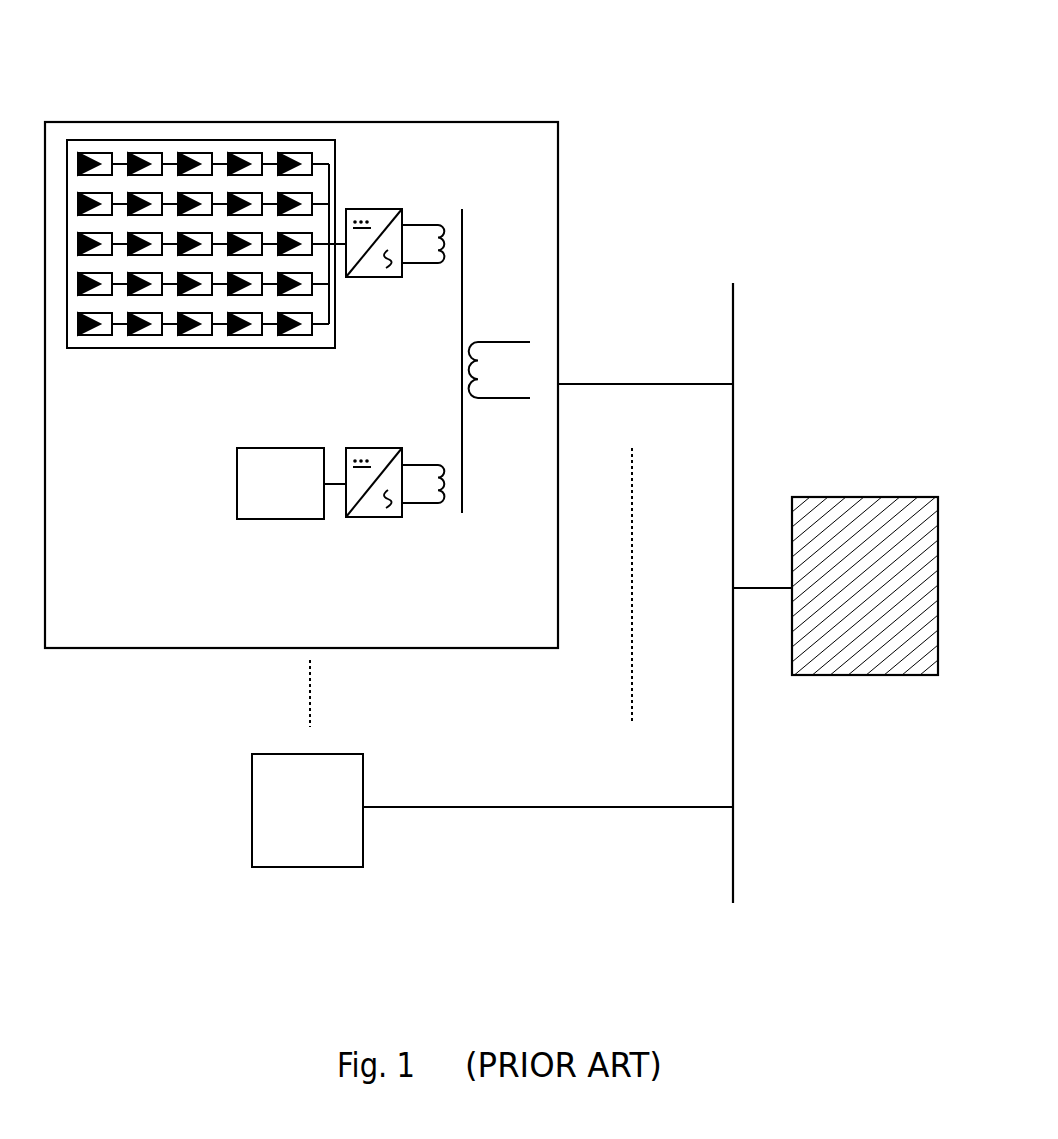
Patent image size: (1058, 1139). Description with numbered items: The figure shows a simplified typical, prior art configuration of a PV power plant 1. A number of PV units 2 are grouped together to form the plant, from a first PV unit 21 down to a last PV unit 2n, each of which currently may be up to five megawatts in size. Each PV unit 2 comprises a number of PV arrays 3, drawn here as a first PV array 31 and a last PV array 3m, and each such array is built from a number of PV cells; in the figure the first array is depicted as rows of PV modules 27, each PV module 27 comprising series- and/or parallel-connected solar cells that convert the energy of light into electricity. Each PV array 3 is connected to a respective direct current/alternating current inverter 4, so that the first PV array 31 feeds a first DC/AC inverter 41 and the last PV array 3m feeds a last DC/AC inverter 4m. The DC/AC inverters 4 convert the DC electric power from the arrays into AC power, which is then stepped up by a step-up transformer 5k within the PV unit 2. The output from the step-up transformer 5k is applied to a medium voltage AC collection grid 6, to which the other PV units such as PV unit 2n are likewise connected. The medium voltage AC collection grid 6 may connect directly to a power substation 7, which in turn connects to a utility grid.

The PV power plant 1 is at (709, 84).
The PV unit 2 is at (365, 449).
The PV unit 21 is at (528, 232).
The PV unit 2n is at (262, 825).
The PV array 3 is at (233, 291).
The PV array 31 is at (145, 138).
The PV array 3m is at (237, 494).
The DC/AC inverter 4 is at (381, 274).
The DC/AC inverter 41 is at (383, 207).
The DC/AC inverter 4m is at (370, 448).
The step-up transformer 5k is at (493, 350).
The medium voltage AC collection grid 6 is at (782, 801).
The power substation 7 is at (877, 497).
The PV module 27 is at (150, 348).